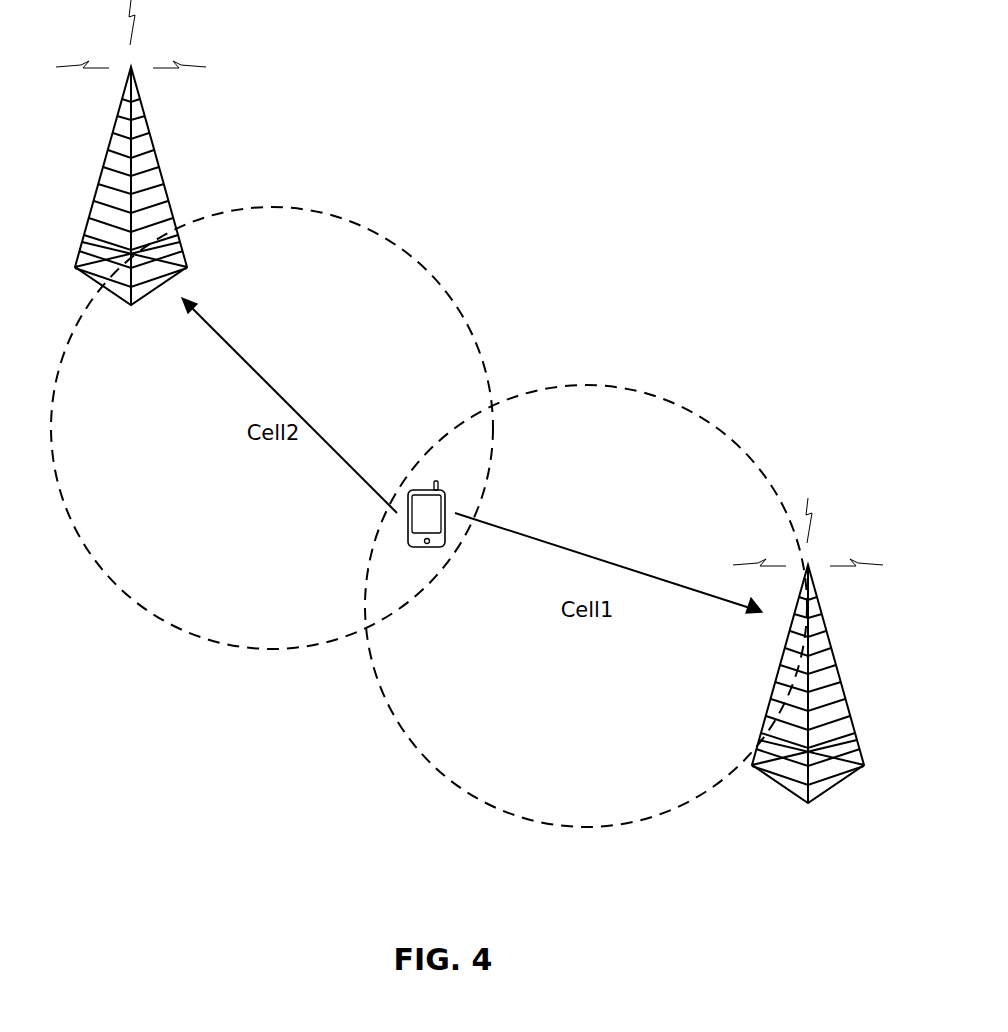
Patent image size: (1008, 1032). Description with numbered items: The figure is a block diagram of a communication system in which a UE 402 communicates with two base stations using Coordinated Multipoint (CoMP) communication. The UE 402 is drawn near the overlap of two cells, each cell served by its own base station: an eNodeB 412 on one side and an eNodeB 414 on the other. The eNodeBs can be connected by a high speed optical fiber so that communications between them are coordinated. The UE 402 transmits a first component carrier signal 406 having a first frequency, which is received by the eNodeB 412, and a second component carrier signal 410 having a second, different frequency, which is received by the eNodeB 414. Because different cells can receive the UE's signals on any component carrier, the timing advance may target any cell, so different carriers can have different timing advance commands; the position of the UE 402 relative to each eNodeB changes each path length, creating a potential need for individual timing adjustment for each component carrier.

The UE 402 is at (413, 488).
The first component carrier signal 406 is at (673, 585).
The second component carrier signal 410 is at (328, 445).
The eNodeB 412 is at (783, 760).
The eNodeB 414 is at (175, 200).